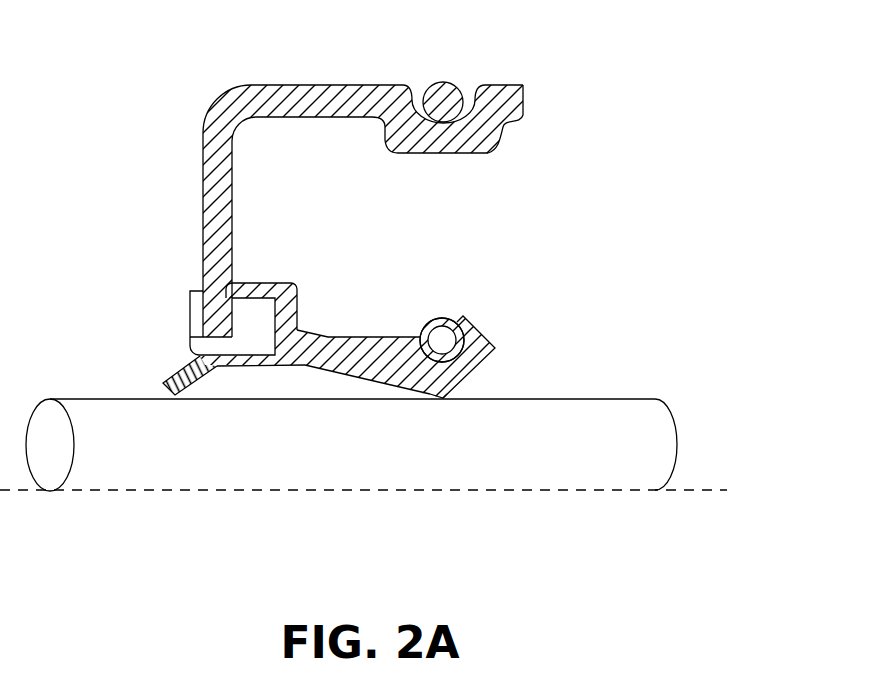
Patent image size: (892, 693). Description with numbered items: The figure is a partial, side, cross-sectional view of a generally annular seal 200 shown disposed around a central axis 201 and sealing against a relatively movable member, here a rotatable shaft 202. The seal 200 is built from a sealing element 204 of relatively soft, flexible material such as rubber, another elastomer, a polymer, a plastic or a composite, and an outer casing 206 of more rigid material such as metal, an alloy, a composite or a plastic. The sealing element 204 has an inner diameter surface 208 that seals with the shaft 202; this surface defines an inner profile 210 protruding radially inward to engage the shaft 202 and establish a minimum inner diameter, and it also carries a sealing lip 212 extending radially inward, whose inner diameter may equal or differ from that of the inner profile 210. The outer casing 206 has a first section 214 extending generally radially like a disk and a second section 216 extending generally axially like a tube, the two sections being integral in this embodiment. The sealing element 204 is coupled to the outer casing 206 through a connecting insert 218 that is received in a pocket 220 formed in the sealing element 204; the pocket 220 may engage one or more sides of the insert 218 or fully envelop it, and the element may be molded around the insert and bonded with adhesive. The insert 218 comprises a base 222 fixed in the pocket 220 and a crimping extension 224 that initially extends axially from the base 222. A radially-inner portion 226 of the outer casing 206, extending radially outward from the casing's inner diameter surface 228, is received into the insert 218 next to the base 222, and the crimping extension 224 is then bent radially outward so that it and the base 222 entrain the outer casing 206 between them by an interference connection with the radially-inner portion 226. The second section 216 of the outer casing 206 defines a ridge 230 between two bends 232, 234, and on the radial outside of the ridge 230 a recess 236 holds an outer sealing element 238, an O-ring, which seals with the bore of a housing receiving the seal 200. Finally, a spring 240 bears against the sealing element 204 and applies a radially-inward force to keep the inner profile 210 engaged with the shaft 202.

The seal 200 is at (159, 56).
The central axis 201 is at (678, 492).
The rotatable shaft 202 is at (662, 418).
The sealing element 204 is at (380, 335).
The outer casing 206 is at (265, 88).
The inner diameter surface 208 is at (350, 377).
The inner profile 210 is at (443, 398).
The sealing lip 212 is at (184, 394).
The first section 214 is at (236, 235).
The second section 216 is at (363, 87).
The connecting insert 218 is at (189, 343).
The pocket 220 is at (270, 306).
The base 222 is at (298, 323).
The crimping extension 224 is at (189, 300).
The radially-inner portion 226 is at (220, 352).
The inner diameter surface 228 is at (222, 365).
The ridge 230 is at (428, 155).
The bend 232 is at (383, 150).
The bend 234 is at (493, 150).
The recess 236 is at (474, 73).
The outer sealing element 238 is at (448, 80).
The spring 240 is at (442, 318).